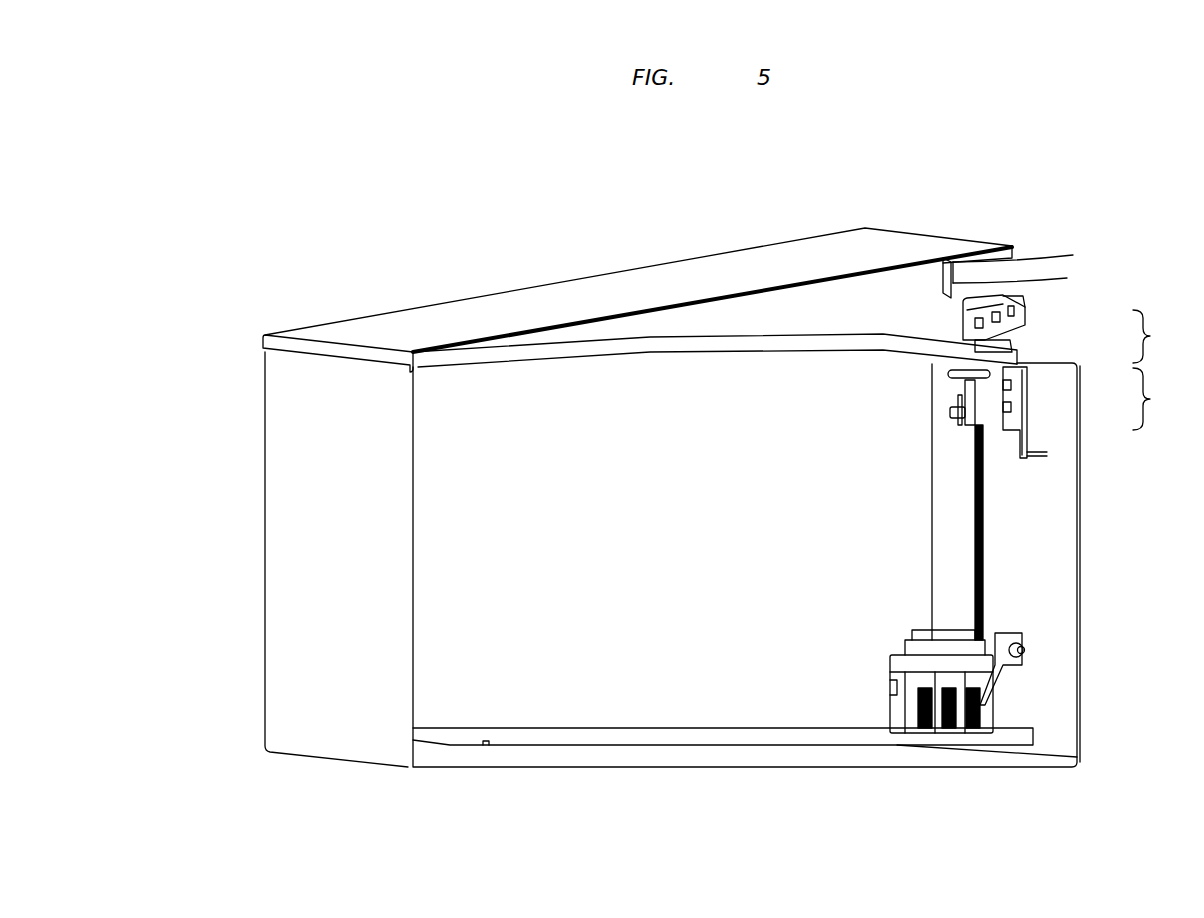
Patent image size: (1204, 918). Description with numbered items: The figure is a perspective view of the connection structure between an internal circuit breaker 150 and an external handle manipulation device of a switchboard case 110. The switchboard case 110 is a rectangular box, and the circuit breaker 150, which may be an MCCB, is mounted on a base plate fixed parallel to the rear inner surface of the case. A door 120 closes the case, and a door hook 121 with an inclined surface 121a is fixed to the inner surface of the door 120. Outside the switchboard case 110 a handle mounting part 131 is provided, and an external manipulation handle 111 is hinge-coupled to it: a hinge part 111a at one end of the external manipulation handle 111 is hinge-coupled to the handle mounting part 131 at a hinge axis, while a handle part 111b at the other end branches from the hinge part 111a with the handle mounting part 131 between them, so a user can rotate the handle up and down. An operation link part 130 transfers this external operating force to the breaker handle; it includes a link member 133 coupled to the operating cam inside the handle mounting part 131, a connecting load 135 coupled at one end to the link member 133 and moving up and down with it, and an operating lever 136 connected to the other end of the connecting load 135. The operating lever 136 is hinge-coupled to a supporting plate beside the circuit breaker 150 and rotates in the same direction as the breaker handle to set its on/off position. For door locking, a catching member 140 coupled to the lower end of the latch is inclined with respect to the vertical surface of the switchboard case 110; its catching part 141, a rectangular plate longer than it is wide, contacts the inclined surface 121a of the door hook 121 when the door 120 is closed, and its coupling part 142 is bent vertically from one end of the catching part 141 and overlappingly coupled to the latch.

The switchboard case 110 is at (289, 452).
The door 120 is at (445, 315).
The door hook 121 is at (955, 263).
The inclined surface 121a is at (963, 282).
The handle mounting part 131 is at (993, 303).
The external manipulation handle 111 is at (1164, 336).
The hinge part 111a is at (1023, 318).
The handle part 111b is at (1020, 347).
The operation link part 130 is at (958, 403).
The link member 133 is at (983, 378).
The connecting load 135 is at (975, 500).
The operating lever 136 is at (990, 672).
The catching member 140 is at (1099, 412).
The catching part 141 is at (985, 382).
The coupling part 142 is at (985, 374).
The circuit breaker 150 is at (887, 688).